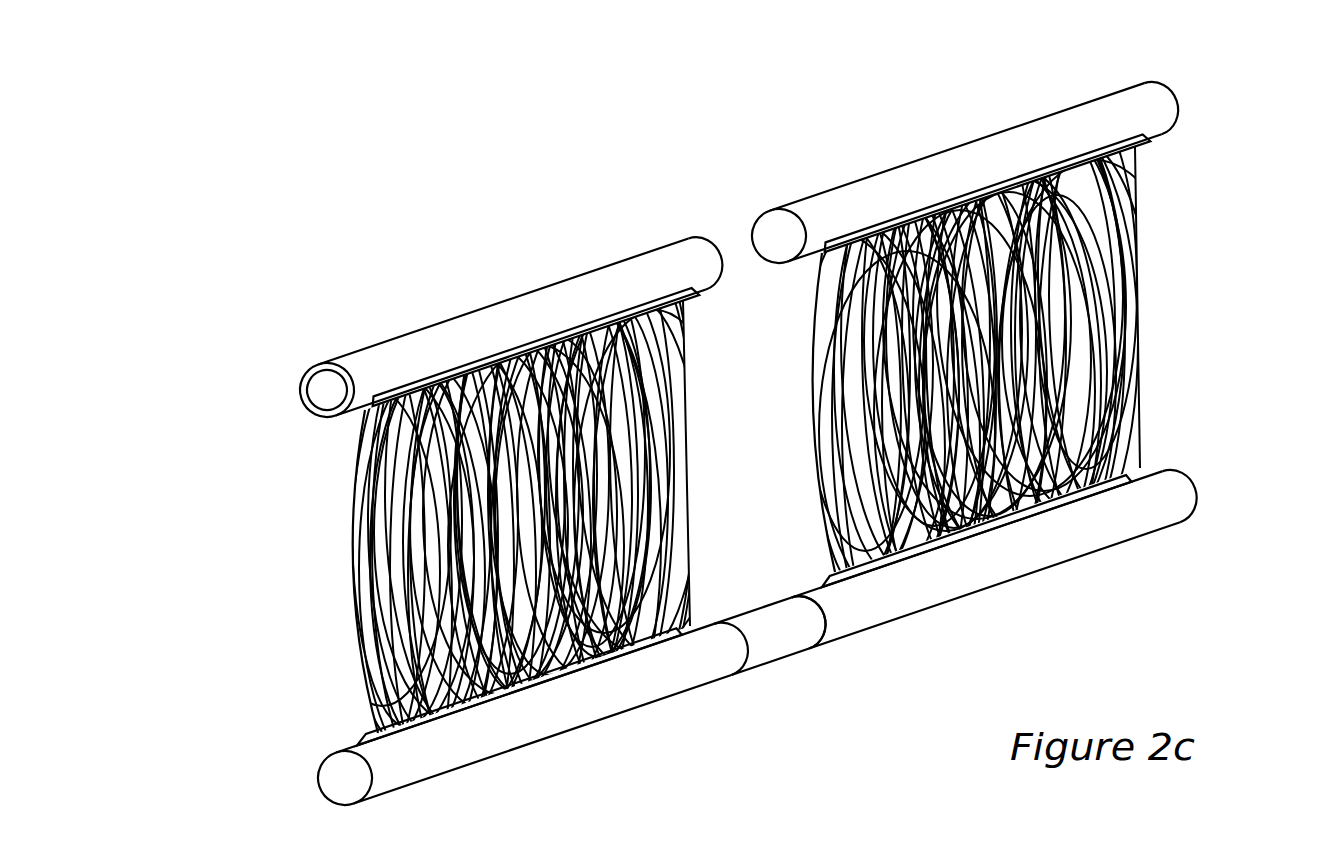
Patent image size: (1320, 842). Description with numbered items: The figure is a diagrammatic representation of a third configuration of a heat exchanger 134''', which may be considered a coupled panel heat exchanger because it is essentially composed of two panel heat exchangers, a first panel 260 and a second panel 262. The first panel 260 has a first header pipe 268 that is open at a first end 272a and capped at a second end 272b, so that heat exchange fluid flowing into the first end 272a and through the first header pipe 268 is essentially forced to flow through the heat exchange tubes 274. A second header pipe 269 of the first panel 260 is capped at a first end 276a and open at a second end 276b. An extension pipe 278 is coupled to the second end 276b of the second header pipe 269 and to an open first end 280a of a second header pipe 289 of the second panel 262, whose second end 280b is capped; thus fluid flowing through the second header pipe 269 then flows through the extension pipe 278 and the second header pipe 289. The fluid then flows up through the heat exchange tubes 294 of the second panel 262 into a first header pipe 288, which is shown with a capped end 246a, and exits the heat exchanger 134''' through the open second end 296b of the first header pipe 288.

The heat exchanger 134''' is at (764, 433).
The first panel 260 is at (392, 308).
The second panel 262 is at (1105, 70).
The first header pipe 268 is at (562, 280).
The second header pipe 269 is at (570, 717).
The first end 272a is at (327, 390).
The second end 272b is at (708, 259).
The heat exchange tubes 274 is at (360, 583).
The first end 276a is at (345, 778).
The second end 276b is at (734, 645).
The extension pipe 278 is at (770, 638).
The first end 280a is at (812, 618).
The second end 280b is at (1183, 492).
The first header pipe 288 is at (943, 144).
The second header pipe 289 is at (957, 580).
The heat exchange tubes 294 is at (1140, 322).
The end of upper tube of second module 246a is at (779, 236).
The second end 296b is at (1164, 104).